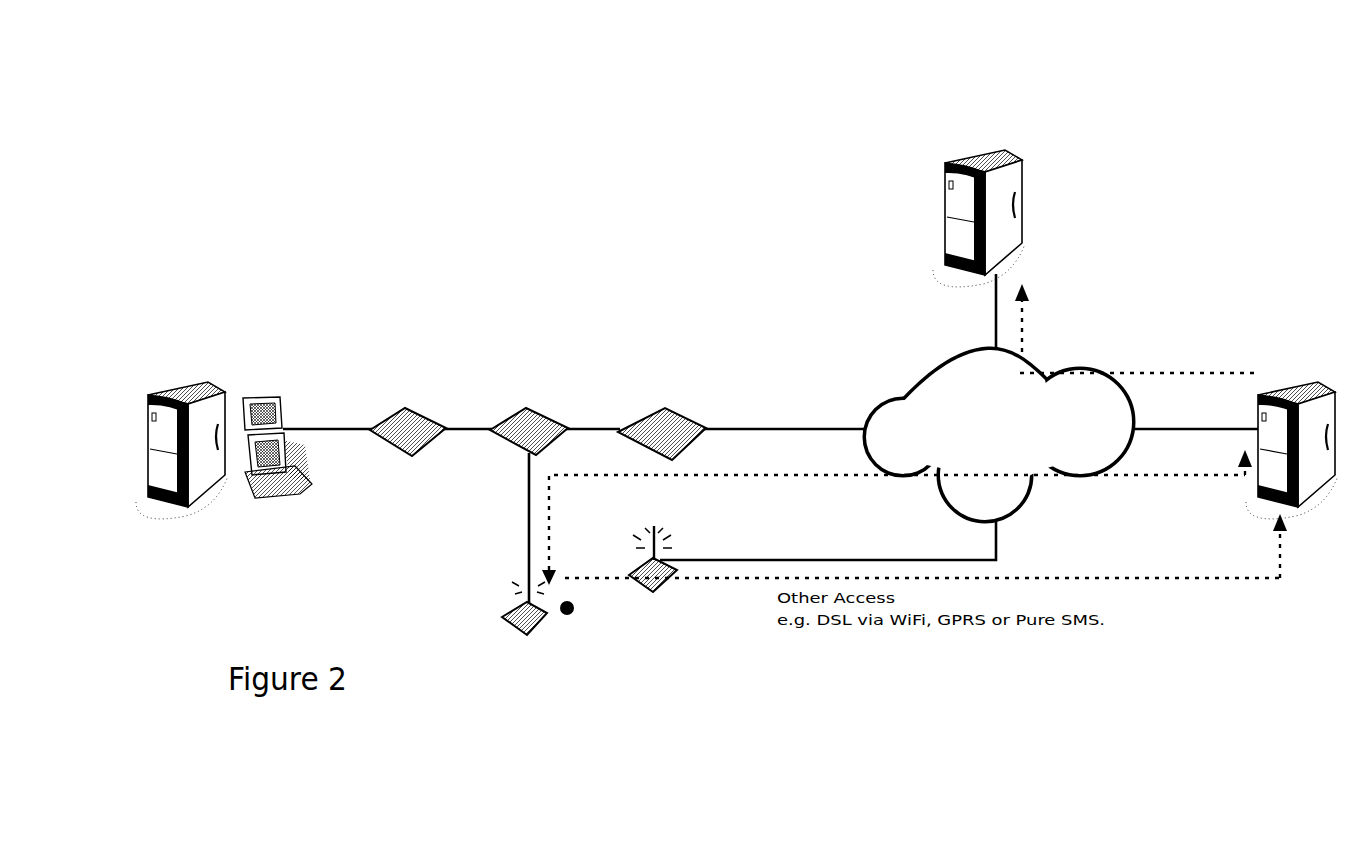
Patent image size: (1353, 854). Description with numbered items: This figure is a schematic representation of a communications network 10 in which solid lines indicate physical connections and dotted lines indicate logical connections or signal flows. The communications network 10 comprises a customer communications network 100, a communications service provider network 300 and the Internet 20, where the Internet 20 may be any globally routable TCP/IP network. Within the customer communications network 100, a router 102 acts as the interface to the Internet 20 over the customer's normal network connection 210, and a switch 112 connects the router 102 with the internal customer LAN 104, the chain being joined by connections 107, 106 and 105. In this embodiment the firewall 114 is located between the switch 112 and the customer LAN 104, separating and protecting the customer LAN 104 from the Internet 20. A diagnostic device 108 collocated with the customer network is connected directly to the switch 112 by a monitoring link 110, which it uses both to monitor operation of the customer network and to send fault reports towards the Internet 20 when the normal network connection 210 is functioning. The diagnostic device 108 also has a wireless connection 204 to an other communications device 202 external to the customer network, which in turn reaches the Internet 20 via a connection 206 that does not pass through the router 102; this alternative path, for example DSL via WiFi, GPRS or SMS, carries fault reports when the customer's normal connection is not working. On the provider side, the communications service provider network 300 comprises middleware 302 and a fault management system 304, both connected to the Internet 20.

The communications network 10 is at (320, 124).
The customer communications network 100 is at (497, 276).
The communications service provider network 300 is at (1265, 191).
The customer LAN 104 is at (224, 422).
The connection 107 is at (327, 418).
The firewall 114 is at (408, 396).
The connection 106 is at (468, 418).
The switch 112 is at (529, 394).
The connection 105 is at (593, 418).
The router 102 is at (662, 398).
The customer's normal network connection 210 is at (788, 402).
The Internet 20 is at (999, 435).
The fault management system 304 is at (981, 239).
The middleware 302 is at (1179, 469).
The monitoring link 110 is at (511, 528).
The diagnostic device 108 is at (494, 620).
The wireless connection 204 is at (595, 553).
The other communications device 202 is at (653, 572).
The connection 206 is at (828, 532).